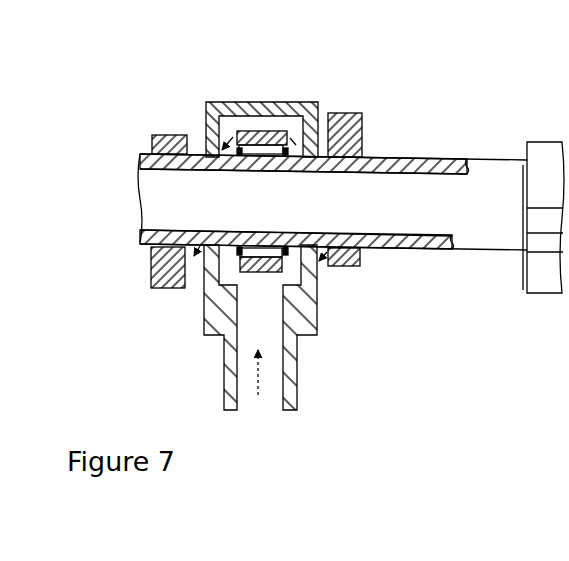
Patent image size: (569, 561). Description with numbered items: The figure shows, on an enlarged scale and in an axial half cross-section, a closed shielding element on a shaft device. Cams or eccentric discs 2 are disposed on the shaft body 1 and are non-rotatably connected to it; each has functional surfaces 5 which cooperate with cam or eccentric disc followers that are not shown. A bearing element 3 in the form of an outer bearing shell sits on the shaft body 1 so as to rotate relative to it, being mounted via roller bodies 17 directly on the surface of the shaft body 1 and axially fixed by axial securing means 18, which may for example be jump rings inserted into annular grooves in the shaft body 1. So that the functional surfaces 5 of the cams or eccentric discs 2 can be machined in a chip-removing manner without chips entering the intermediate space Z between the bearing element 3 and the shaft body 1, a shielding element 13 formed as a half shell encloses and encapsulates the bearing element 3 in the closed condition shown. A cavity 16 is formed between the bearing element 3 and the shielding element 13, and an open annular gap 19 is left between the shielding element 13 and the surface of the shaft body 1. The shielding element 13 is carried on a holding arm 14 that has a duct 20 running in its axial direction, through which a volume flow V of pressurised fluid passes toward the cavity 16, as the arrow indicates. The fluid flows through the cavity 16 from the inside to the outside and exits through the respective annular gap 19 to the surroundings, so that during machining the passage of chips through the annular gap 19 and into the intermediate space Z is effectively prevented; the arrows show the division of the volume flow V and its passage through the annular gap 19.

The shaft body 1 is at (418, 158).
The cams or eccentric discs 2 is at (537, 278).
The bearing element 3 is at (277, 133).
The functional surfaces 5 is at (178, 298).
The shielding element 13 is at (225, 103).
The holding arm 14 is at (292, 388).
The cavity 16 is at (253, 120).
The roller bodies 17 is at (263, 143).
The axial securing means 18 is at (226, 250).
The annular gap 19 is at (201, 148).
The duct 20 is at (255, 323).
The intermediate space Z is at (301, 151).
The volume flow V is at (257, 387).